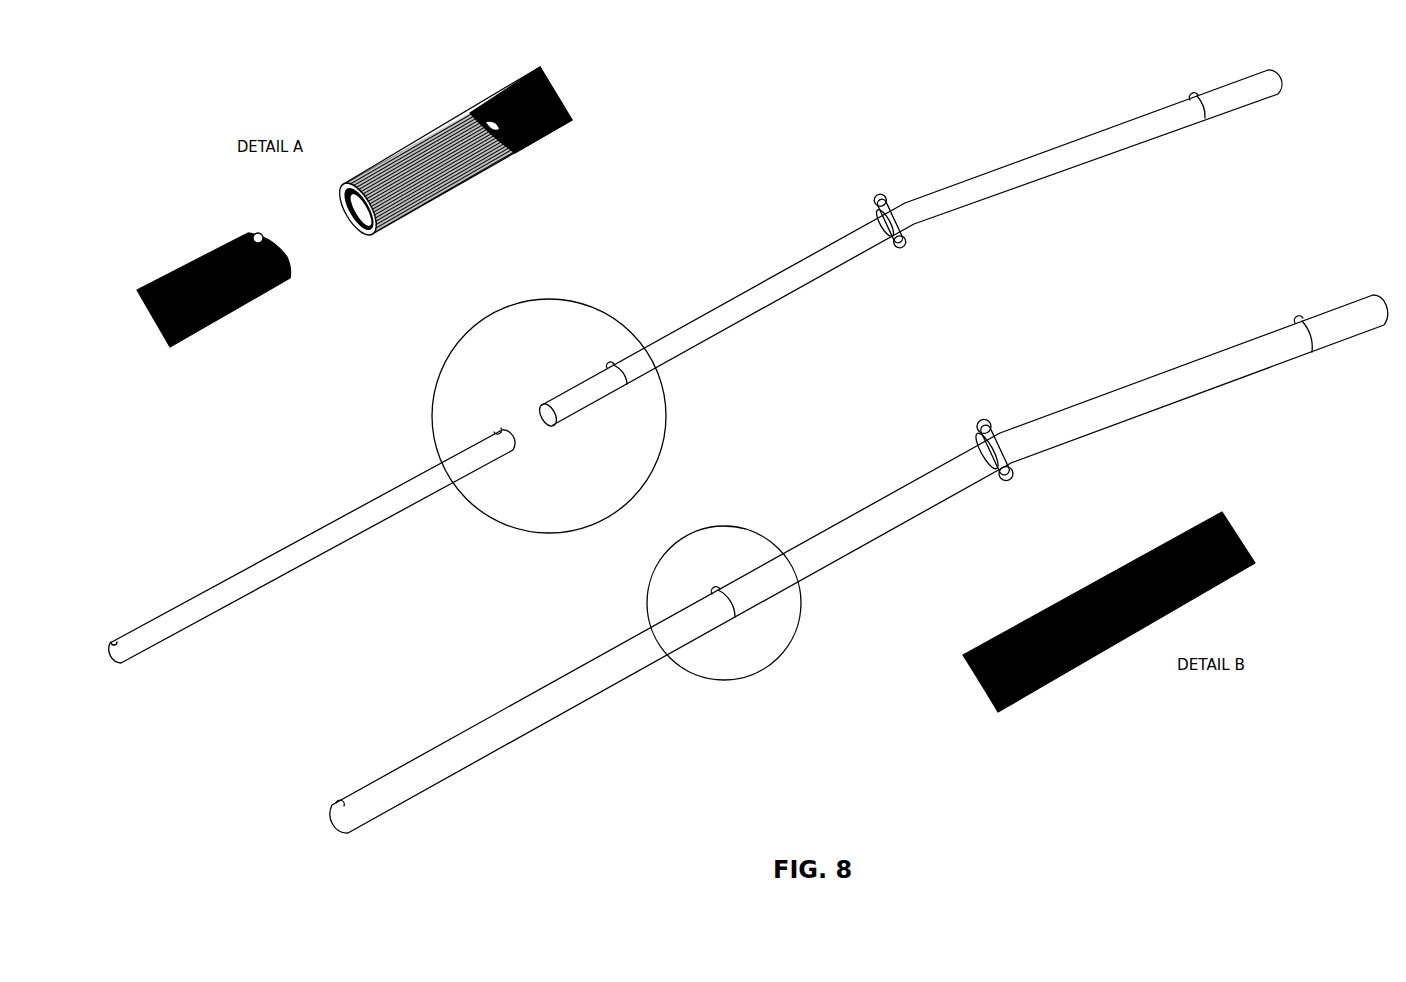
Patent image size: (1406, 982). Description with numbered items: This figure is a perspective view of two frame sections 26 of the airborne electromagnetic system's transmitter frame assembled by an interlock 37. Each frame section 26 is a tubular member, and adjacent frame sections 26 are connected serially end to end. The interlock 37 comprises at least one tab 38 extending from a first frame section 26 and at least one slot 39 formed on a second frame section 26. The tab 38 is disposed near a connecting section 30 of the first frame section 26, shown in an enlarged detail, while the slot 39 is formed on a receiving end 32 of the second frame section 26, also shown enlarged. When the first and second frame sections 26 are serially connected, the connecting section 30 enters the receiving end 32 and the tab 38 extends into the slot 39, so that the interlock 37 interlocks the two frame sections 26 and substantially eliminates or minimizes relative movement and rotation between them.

The frame section 26 is at (267, 596).
The connecting section 30 is at (420, 208).
The receiving end 32 is at (240, 312).
The interlock 37 is at (517, 530).
The tab 38 is at (495, 163).
The slot 39 is at (261, 232).